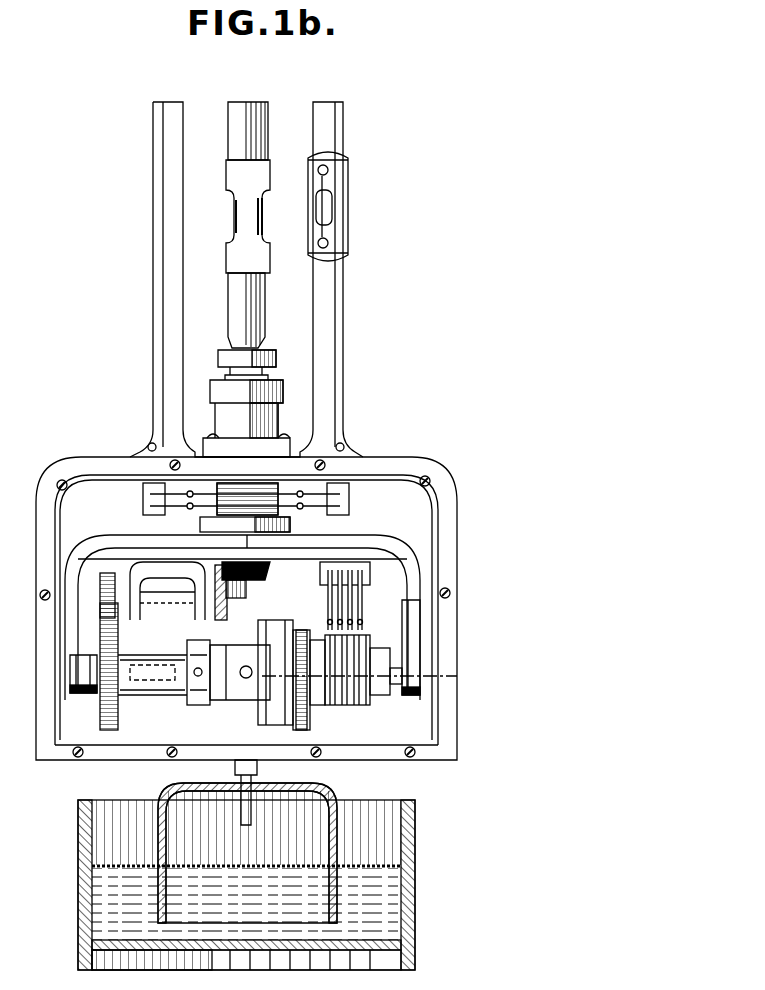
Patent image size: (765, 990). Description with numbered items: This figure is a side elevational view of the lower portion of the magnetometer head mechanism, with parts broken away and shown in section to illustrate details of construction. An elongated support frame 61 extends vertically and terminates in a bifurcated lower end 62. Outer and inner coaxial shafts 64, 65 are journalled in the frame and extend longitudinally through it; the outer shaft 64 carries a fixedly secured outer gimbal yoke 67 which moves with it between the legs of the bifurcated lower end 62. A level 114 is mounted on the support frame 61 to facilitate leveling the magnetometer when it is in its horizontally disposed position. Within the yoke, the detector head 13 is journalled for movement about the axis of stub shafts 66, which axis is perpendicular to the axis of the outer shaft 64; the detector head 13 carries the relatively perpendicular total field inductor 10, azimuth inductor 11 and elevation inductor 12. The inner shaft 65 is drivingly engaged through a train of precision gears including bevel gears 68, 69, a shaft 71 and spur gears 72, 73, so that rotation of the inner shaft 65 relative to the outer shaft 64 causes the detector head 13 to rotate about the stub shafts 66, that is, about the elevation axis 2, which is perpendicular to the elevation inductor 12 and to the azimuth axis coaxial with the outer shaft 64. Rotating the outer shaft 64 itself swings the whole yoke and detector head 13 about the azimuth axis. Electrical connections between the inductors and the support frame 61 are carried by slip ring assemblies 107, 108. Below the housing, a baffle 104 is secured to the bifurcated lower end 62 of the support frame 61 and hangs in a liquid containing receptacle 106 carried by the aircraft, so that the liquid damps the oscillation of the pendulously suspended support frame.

The elevation axis 2 is at (457, 676).
The total field inductor 10 is at (246, 678).
The azimuth inductor 11 is at (150, 688).
The elevation inductor 12 is at (288, 622).
The detector head 13 is at (150, 658).
The support frame 61 is at (340, 305).
The bifurcated lower end 62 is at (440, 500).
The outer shaft 64 is at (268, 136).
The inner shaft 65 is at (263, 228).
The stub shafts 66 is at (93, 693).
The outer gimbal yoke 67 is at (392, 546).
The bevel gear 68 is at (268, 568).
The bevel gear 69 is at (226, 612).
The shaft 71 is at (246, 592).
The spur gear 72 is at (106, 578).
The spur gear 73 is at (117, 640).
The baffle 104 is at (296, 782).
The liquid containing receptacle 106 is at (412, 864).
The slip ring assembly 107 is at (358, 704).
The slip ring assembly 108 is at (278, 497).
The level 114 is at (337, 182).